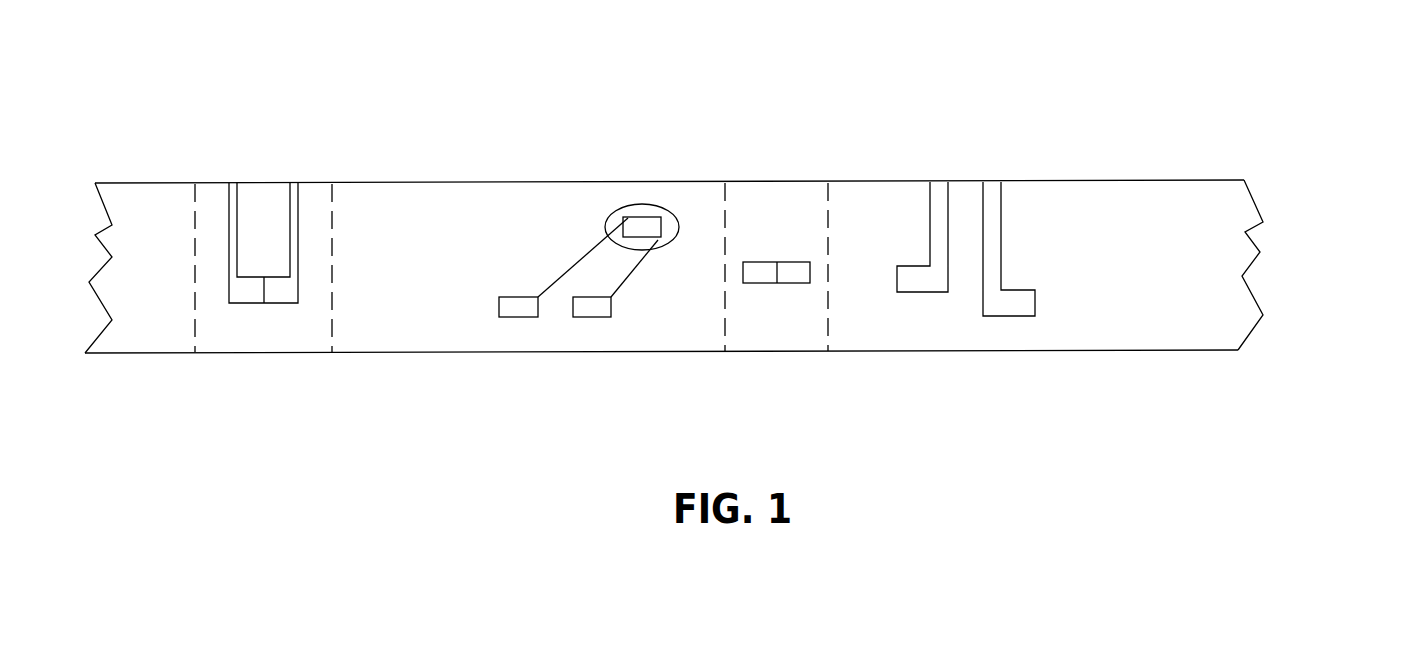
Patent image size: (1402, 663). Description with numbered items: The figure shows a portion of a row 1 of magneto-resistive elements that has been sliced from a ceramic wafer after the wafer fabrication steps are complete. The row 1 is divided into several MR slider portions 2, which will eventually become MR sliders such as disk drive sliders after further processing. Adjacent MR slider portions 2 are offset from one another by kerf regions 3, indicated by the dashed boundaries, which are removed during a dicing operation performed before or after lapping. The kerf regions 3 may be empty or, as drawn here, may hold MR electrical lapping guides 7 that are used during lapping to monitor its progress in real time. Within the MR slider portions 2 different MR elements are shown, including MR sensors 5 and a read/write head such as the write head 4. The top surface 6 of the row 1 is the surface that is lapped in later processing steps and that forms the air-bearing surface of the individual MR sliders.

The row 1 is at (743, 228).
The MR slider portions 2 is at (674, 218).
The kerf regions 3 is at (514, 298).
The write head 4 is at (623, 214).
The MR sensors 5 is at (966, 179).
The top surface 6 is at (896, 124).
The MR electrical lapping guides 7 is at (263, 208).